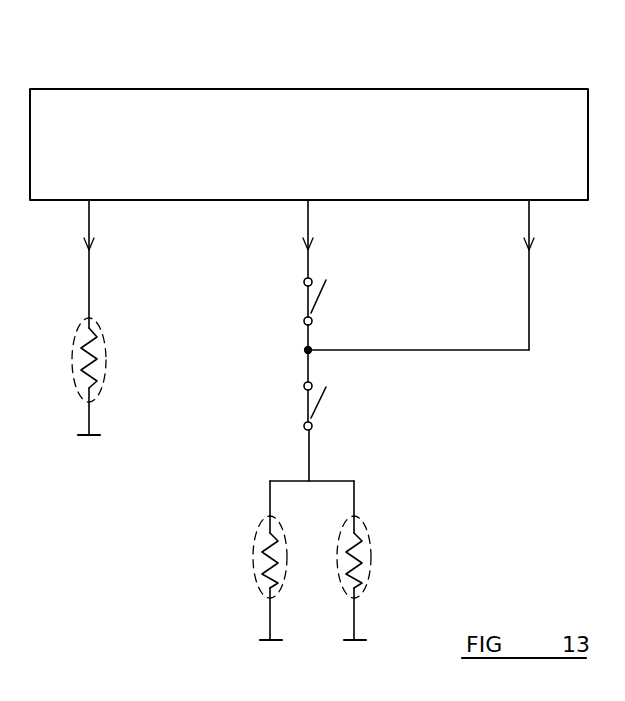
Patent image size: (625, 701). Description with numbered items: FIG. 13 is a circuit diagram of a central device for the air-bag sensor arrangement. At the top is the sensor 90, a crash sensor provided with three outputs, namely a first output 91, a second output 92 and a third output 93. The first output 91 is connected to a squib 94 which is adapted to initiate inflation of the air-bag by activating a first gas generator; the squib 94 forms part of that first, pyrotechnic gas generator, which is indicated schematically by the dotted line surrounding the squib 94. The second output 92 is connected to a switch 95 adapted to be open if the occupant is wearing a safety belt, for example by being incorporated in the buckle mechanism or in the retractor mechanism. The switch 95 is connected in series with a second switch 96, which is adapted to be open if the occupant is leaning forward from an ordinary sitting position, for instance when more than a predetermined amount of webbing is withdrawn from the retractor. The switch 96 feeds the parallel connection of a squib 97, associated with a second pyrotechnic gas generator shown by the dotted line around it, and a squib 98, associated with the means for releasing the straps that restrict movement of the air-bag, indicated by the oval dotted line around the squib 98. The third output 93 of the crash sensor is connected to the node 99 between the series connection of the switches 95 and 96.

The sensor 90 is at (523, 89).
The first output 91 is at (89, 217).
The second output 92 is at (308, 218).
The third output 93 is at (529, 218).
The squib 94 is at (108, 370).
The switch 95 is at (320, 301).
The second switch 96 is at (323, 402).
The squib 97 is at (258, 556).
The squib 98 is at (368, 569).
The node 99 is at (312, 348).